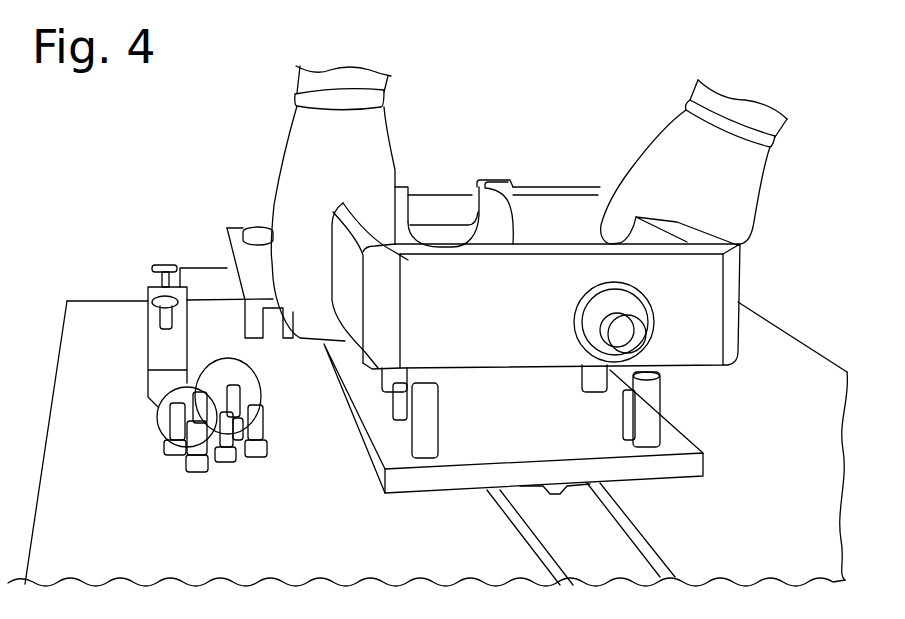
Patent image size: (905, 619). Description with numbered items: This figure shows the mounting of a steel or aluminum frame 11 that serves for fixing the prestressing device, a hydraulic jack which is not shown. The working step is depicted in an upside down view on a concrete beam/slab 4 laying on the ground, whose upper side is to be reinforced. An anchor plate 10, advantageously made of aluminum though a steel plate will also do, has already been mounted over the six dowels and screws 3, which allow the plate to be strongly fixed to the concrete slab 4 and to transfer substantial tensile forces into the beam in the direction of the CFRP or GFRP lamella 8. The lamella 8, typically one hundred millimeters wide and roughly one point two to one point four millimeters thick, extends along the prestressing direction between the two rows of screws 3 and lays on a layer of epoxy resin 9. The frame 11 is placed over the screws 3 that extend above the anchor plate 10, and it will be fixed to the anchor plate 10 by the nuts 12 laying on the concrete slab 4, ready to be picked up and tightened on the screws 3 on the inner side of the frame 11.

The screws 3 is at (647, 425).
The concrete beam/slab 4 is at (116, 338).
The CFRP or GFRP lamella 8 is at (604, 526).
The layer of epoxy resin 9 is at (540, 557).
The anchor plate 10 is at (557, 417).
The frame 11 is at (688, 315).
The nuts 12 is at (160, 465).